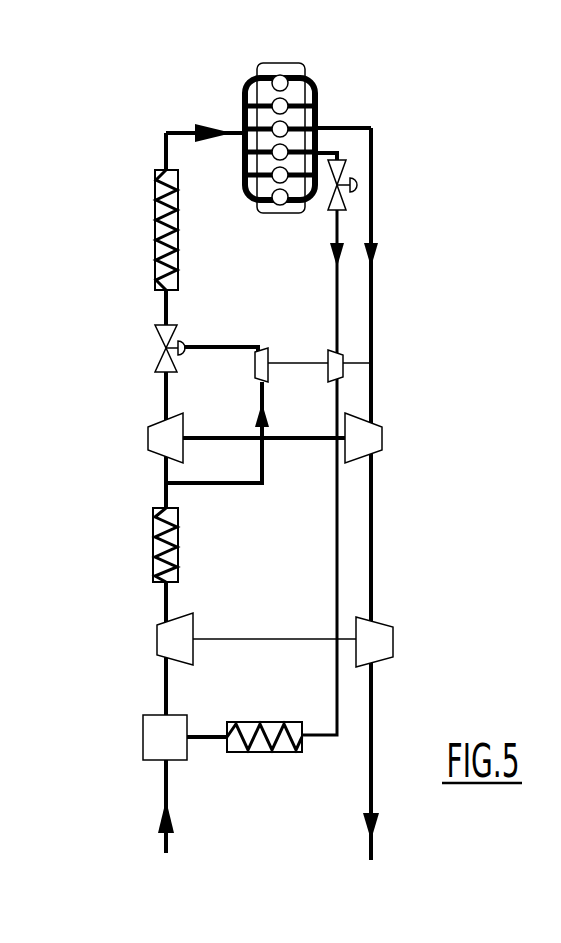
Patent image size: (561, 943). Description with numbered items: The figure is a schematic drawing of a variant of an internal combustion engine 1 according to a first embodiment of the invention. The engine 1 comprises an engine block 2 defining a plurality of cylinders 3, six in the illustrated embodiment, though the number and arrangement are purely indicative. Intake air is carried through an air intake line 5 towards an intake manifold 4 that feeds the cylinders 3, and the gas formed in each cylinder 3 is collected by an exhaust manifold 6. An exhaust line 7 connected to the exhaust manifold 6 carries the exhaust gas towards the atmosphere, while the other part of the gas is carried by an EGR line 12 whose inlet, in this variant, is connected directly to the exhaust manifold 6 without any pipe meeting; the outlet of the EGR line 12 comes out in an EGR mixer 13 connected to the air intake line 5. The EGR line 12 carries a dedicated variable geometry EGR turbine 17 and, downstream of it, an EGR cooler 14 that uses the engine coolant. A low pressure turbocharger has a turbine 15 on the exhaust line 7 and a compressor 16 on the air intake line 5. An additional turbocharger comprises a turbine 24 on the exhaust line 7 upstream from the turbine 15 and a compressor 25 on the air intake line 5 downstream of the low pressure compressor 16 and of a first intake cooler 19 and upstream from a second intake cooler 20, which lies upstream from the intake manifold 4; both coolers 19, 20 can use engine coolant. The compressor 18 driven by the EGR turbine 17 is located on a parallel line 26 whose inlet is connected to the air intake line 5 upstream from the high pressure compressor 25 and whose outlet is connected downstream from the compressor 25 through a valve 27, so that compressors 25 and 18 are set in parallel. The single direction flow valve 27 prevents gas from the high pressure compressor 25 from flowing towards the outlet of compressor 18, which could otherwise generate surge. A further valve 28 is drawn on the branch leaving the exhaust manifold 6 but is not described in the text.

The internal combustion engine 1 is at (400, 122).
The engine block 2 is at (287, 126).
The cylinders 3 is at (280, 76).
The intake manifold 4 is at (243, 110).
The air intake line 5 is at (162, 780).
The exhaust manifold 6 is at (318, 112).
The exhaust line 7 is at (373, 808).
The EGR line 12 is at (319, 740).
The EGR mixer 13 is at (168, 738).
The EGR cooler 14 is at (273, 722).
The turbine 15 is at (393, 640).
The compressor 16 is at (168, 637).
The EGR turbine 17 is at (372, 363).
The compressor 18 is at (255, 358).
The first intake cooler 19 is at (152, 573).
The second intake cooler 20 is at (155, 220).
The turbine 24 is at (382, 438).
The compressor 25 is at (147, 440).
The parallel line 26 is at (223, 345).
The valve 27 is at (153, 352).
The control valve 28 is at (346, 205).